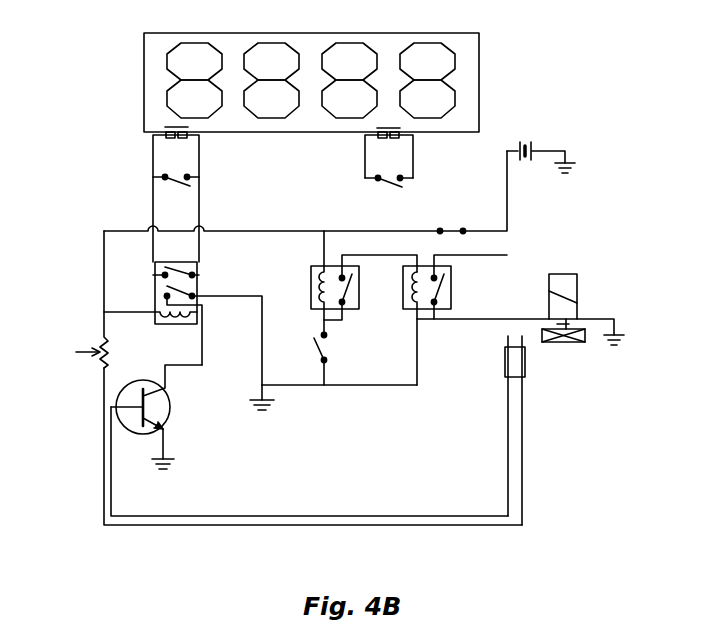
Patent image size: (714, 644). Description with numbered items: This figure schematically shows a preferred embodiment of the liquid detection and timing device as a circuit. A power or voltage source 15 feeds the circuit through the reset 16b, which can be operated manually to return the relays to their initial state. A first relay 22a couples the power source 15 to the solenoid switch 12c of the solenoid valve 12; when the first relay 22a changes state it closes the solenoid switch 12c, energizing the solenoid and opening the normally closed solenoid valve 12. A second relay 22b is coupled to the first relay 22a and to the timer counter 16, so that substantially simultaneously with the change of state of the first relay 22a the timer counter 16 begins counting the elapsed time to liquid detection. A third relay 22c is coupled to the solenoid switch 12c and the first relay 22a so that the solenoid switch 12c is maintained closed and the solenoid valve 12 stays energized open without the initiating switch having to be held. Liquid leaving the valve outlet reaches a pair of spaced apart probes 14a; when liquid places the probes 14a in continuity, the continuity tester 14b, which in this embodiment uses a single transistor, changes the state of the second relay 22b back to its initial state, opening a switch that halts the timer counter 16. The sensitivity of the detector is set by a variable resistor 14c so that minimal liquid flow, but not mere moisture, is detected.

The timer counter 16 is at (480, 78).
The reset 16b is at (452, 228).
The power or voltage source 15 is at (533, 157).
The first relay 22a is at (198, 283).
The second relay 22b is at (311, 284).
The third relay 22c is at (451, 283).
The solenoid valve 12 is at (568, 274).
The solenoid switch 12c is at (567, 343).
The probes 14a is at (527, 362).
The continuity tester 14b is at (172, 416).
The resistor 14c is at (100, 343).